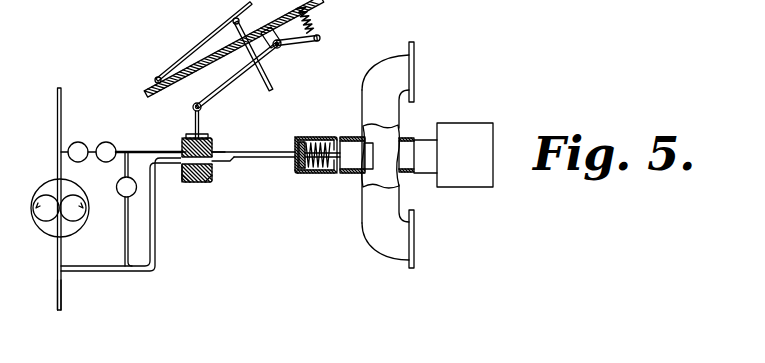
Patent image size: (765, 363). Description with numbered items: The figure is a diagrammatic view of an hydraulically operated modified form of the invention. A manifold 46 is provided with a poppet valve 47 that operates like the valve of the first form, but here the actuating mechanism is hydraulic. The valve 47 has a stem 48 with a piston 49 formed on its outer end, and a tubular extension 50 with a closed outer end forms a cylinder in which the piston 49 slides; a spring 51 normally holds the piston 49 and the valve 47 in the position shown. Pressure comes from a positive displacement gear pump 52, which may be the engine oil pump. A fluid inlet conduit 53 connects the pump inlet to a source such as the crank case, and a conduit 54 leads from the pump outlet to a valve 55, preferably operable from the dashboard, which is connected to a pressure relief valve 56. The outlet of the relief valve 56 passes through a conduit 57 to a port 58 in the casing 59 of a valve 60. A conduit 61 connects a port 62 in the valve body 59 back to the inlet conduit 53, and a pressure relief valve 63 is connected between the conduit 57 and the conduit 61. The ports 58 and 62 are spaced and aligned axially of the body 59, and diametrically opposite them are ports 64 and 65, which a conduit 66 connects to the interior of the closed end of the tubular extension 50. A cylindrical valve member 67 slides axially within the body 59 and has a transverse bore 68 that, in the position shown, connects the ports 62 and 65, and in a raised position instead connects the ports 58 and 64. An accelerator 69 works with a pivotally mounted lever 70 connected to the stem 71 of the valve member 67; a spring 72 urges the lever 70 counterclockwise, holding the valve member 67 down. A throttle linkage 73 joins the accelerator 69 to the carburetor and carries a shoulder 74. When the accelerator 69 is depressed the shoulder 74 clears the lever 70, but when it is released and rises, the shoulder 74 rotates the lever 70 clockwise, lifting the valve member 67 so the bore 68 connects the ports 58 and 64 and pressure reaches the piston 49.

The manifold 46 is at (385, 80).
The poppet valve 47 is at (390, 140).
The stem 48 is at (350, 137).
The piston 49 is at (303, 176).
The tubular extension 50 is at (304, 140).
The spring 51 is at (320, 175).
The positive displacement gear pump 52 is at (42, 238).
The fluid inlet conduit 53 is at (57, 290).
The conduit 54 is at (57, 127).
The valve 55 is at (80, 142).
The pressure relief valve 56 is at (110, 142).
The conduit 57 is at (143, 150).
The port 58 is at (182, 143).
The casing 59 is at (200, 184).
The valve 60 is at (210, 136).
The conduit 61 is at (157, 251).
The port 62 is at (184, 170).
The pressure relief valve 63 is at (116, 190).
The port 64 is at (213, 150).
The port 65 is at (212, 166).
The conduit 66 is at (262, 163).
The cylindrical valve member 67 is at (210, 182).
The transverse bore 68 is at (186, 184).
The accelerator 69 is at (226, 30).
The lever 70 is at (232, 76).
The stem 71 is at (201, 110).
The spring 72 is at (313, 20).
The throttle linkage 73 is at (272, 78).
The shoulder 74 is at (272, 50).